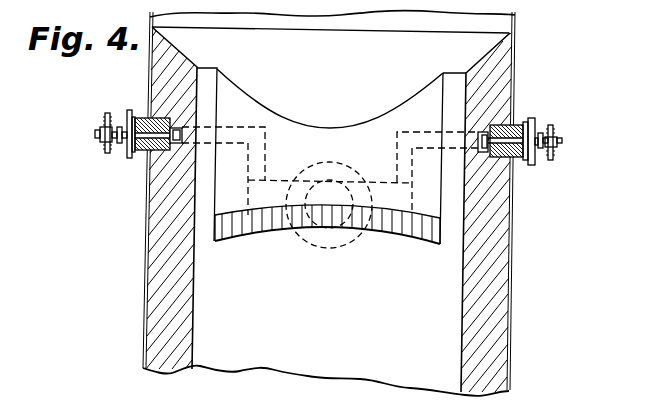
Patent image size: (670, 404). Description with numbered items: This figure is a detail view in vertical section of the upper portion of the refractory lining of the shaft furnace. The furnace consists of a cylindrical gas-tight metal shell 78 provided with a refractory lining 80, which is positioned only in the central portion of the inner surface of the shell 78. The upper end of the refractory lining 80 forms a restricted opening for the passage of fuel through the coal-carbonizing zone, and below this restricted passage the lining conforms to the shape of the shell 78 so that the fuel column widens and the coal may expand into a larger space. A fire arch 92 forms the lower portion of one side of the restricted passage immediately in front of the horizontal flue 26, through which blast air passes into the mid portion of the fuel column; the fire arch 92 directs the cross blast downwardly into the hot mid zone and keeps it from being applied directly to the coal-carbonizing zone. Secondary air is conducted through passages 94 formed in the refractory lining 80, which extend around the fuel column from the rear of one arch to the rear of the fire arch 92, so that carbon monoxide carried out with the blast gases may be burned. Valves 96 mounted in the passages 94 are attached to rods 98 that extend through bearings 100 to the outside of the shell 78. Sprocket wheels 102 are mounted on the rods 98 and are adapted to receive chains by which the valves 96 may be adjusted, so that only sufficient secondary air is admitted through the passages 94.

The horizontal flue 26 is at (350, 178).
The metal shell 78 is at (515, 185).
The refractory lining 80 is at (185, 267).
The fire arch 92 is at (397, 232).
The secondary air passages 94 is at (266, 128).
The valves 96 is at (181, 127).
The rods 98 is at (141, 146).
The bearings 100 is at (117, 110).
The sprocket wheels 102 is at (106, 117).